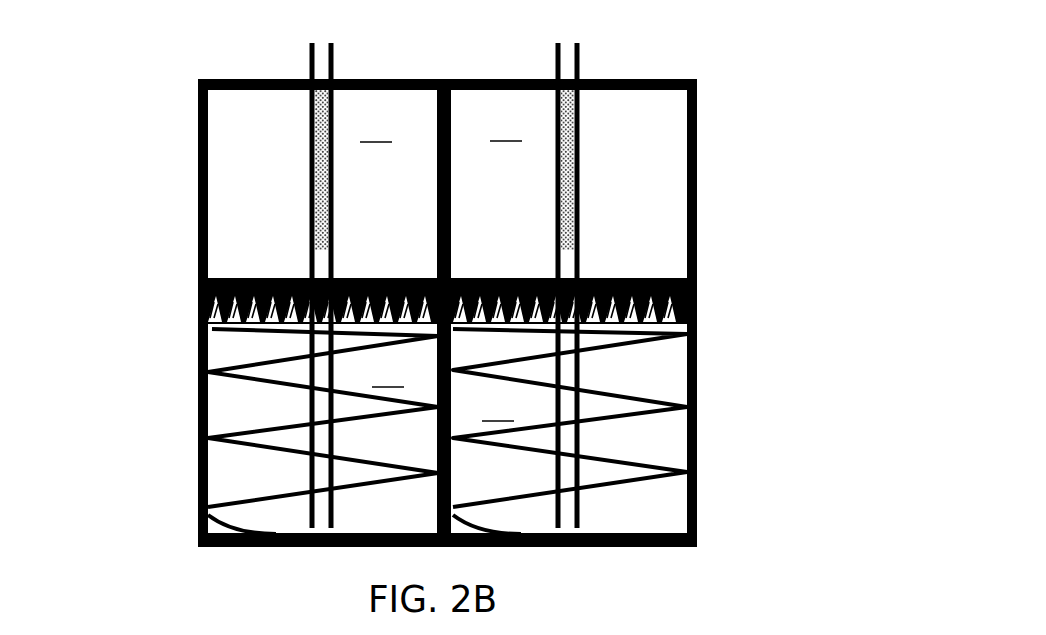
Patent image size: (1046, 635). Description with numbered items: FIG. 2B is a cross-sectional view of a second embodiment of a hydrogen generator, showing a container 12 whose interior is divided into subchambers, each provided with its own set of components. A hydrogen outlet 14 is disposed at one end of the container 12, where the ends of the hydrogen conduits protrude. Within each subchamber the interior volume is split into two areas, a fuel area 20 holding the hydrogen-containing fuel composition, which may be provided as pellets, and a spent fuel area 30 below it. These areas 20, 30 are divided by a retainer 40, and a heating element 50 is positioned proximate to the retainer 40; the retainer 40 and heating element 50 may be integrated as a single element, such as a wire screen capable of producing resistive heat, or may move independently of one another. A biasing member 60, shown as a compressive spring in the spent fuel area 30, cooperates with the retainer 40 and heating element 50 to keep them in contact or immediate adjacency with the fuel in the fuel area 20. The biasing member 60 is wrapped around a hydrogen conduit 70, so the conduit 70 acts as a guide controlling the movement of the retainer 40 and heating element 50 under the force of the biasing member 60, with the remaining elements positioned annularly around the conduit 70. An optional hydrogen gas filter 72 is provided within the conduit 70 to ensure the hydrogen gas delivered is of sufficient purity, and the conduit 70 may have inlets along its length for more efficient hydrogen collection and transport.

The container 12 is at (198, 163).
The hydrogen outlet 14 is at (312, 55).
The fuel area 20 is at (441, 128).
The spent fuel area 30 is at (443, 391).
The retainer 40 is at (232, 278).
The heating element 50 is at (257, 326).
The biasing member 60 is at (275, 455).
The hydrogen conduit 70 is at (309, 416).
The hydrogen gas filter 72 is at (315, 128).